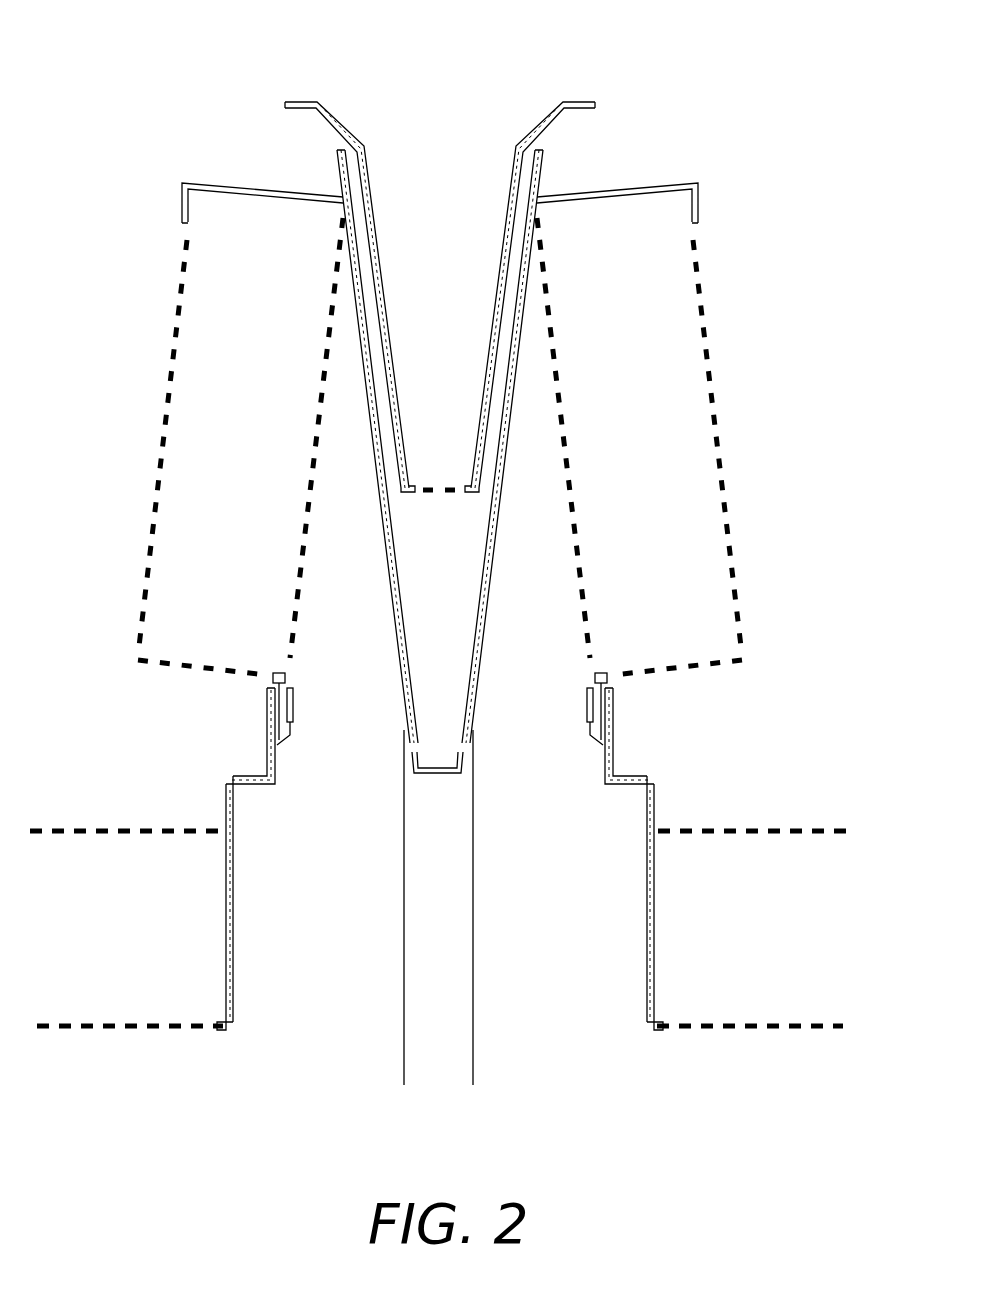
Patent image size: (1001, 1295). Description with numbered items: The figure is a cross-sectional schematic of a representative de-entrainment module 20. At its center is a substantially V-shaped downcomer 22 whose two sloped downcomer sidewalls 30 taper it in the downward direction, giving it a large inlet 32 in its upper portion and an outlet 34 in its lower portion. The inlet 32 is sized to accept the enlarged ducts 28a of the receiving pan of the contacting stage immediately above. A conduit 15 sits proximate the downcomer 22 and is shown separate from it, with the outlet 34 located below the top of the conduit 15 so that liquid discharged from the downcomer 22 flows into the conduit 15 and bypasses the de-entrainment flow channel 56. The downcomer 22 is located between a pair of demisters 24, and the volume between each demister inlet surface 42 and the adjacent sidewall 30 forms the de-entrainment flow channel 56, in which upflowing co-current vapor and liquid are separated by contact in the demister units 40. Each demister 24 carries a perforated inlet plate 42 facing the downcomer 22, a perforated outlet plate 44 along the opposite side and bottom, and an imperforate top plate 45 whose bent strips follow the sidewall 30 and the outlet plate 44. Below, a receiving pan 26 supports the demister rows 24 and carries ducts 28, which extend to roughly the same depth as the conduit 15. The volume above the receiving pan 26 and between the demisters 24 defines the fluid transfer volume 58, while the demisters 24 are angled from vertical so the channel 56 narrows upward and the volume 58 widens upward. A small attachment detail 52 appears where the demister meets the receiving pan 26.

The de-entrainment module 20 is at (126, 67).
The downcomer 22 is at (375, 540).
The demister 24 is at (160, 244).
The receiving pan 26 is at (252, 741).
The duct 28 is at (250, 942).
The duct of receiving pan of superior contacting stage 28a is at (390, 197).
The downcomer sidewall 30 is at (362, 640).
The downcomer inlet 32 is at (357, 146).
The downcomer outlet 34 is at (418, 751).
The conduit 15 is at (404, 1070).
The demister unit 40 is at (257, 426).
The perforated inlet plate 42 is at (303, 522).
The perforated outlet plate 44 is at (176, 306).
The imperforate top plate 45 is at (205, 182).
The clip 52 is at (296, 702).
The de-entrainment flow channel 56 is at (357, 599).
The fluid transfer volume 58 is at (62, 426).